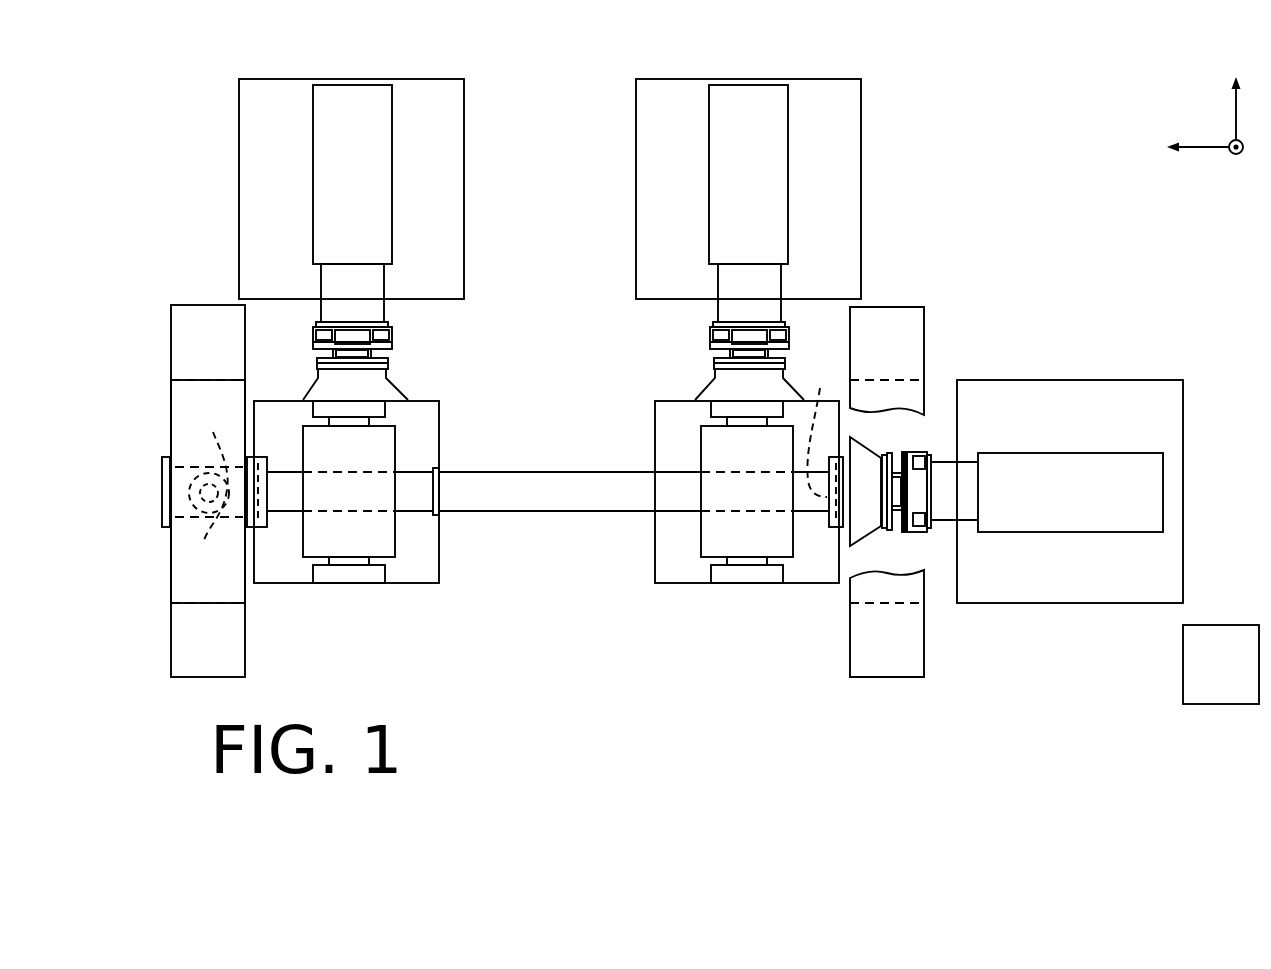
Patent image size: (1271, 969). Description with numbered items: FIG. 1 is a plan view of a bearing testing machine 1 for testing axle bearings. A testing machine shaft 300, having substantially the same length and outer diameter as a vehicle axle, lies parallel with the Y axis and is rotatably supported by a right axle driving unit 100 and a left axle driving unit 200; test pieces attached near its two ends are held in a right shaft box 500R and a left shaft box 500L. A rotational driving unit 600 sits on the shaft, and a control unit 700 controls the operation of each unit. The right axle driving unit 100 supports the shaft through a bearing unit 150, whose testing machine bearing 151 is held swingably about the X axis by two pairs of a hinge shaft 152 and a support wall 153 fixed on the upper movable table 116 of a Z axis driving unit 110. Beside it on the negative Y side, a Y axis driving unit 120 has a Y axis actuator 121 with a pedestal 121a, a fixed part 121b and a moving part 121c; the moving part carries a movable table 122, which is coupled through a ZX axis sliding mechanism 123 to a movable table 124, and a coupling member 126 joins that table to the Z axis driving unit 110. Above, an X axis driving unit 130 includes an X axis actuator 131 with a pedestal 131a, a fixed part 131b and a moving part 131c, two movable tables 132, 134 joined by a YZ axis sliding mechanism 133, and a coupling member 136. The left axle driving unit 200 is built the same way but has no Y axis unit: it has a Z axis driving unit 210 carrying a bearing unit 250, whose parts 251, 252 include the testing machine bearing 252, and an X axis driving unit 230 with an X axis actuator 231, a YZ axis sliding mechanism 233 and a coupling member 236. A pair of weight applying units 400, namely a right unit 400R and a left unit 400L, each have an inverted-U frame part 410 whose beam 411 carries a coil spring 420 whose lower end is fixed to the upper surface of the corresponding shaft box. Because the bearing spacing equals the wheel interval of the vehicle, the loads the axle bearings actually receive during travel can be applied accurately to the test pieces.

The bearing testing machine 1 is at (1022, 97).
The X axis driving unit 230 is at (468, 100).
The X axis actuator 231 is at (393, 127).
The YZ axis sliding mechanism 233 is at (397, 344).
The coupling member 236 is at (388, 385).
The left axle driving unit 200 is at (368, 597).
The Z axis driving unit 210 is at (409, 526).
The bearing unit 250 is at (510, 538).
The rotor 251 is at (397, 527).
The testing machine bearing 252 is at (386, 562).
The X axis driving unit 130 is at (865, 117).
The X axis actuator 131 is at (947, 141).
The pedestal 131a is at (862, 171).
The fixed part 131b is at (789, 228).
The moving part 131c is at (782, 287).
The movable table 132 is at (712, 325).
The YZ axis sliding mechanism 133 is at (703, 339).
The movable table 134 is at (712, 365).
The coupling member 136 is at (700, 380).
The right axle driving unit 100 is at (748, 598).
The Z axis driving unit 110 is at (697, 514).
The upper movable table 116 is at (655, 455).
The bearing unit 150 is at (600, 557).
The testing machine bearing 151 is at (697, 533).
The hinge shaft 152 is at (712, 560).
The support wall 153 is at (712, 575).
The testing machine shaft 300 is at (547, 468).
The rotational driving unit 600 is at (441, 467).
The left shaft box 500L is at (262, 528).
The right shaft box 500R is at (838, 530).
The weight applying units 400 is at (620, 483).
The left weight applying unit 400L is at (250, 657).
The right weight applying unit 400R is at (932, 324).
The frame part 410 is at (280, 515).
The beam 411 is at (241, 593).
The coil spring 420 is at (202, 509).
The movable table 124 is at (886, 456).
The coupling member 126 is at (868, 528).
The movable table 122 is at (926, 455).
The ZX axis sliding mechanism 123 is at (908, 534).
The Y axis driving unit 120 is at (1145, 304).
The Y axis actuator 121 is at (1167, 336).
The pedestal 121a is at (1143, 363).
The fixed part 121b is at (1040, 453).
The moving part 121c is at (957, 458).
The control unit 700 is at (1178, 663).